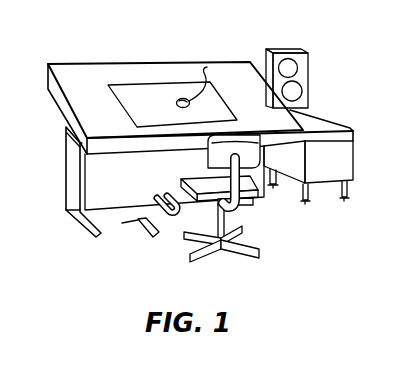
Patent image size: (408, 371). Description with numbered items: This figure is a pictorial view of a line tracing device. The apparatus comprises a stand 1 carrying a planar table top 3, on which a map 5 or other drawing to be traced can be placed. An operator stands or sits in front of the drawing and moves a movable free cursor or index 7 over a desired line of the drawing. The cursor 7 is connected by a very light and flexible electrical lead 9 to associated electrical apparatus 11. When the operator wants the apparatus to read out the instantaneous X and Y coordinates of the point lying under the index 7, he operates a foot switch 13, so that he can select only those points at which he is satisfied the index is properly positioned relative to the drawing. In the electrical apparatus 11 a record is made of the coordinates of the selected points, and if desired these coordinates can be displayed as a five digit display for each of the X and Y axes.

The stand 1 is at (64, 186).
The table top 3 is at (87, 78).
The map 5 is at (148, 93).
The free cursor 7 is at (177, 104).
The electrical lead 9 is at (207, 67).
The electrical apparatus 11 is at (311, 52).
The foot switch 13 is at (148, 238).